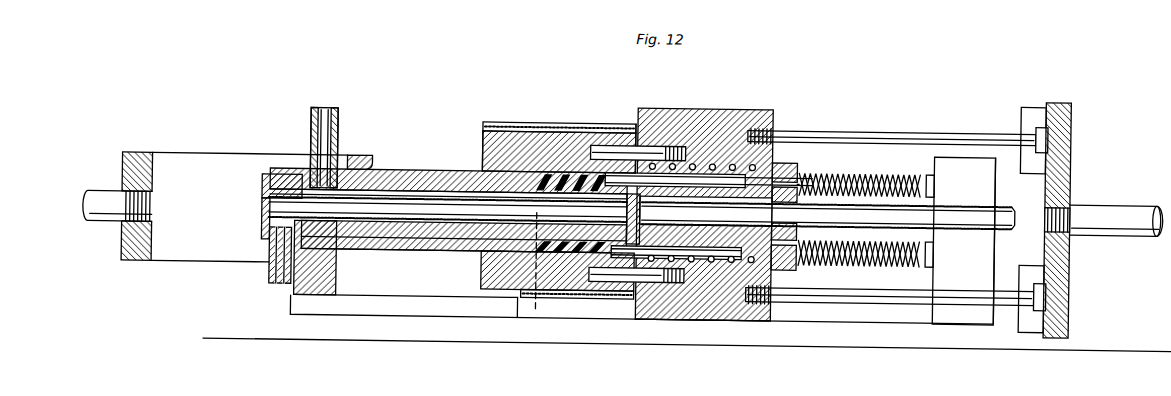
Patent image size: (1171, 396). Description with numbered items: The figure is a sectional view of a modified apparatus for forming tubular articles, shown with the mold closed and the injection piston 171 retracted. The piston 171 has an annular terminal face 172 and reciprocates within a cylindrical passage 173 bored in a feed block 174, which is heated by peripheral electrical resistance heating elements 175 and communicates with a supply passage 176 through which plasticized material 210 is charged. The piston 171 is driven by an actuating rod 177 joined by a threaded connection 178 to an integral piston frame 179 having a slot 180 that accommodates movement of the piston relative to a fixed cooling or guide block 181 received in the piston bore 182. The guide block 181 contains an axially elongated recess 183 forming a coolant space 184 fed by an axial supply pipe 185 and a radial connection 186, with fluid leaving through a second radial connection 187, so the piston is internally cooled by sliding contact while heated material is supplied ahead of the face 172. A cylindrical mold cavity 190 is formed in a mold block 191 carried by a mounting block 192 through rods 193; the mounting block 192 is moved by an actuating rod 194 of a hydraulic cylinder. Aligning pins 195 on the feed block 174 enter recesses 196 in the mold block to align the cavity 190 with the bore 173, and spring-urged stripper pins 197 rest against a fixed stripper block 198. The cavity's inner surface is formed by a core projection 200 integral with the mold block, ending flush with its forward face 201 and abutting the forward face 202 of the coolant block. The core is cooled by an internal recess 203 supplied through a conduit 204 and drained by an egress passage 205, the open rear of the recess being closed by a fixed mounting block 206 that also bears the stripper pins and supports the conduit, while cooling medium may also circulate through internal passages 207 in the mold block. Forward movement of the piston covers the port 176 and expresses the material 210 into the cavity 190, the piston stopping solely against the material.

The injection piston 171 is at (429, 163).
The annular terminal face 172 is at (533, 168).
The cylindrical passage 173 is at (488, 150).
The feed block 174 is at (556, 140).
The electrical resistance heating elements 175 is at (596, 130).
The supply passage 176 is at (687, 249).
The actuating rod 177 is at (105, 172).
The threaded joint 178 is at (145, 205).
The piston frame 179 is at (216, 158).
The slot 180 is at (152, 158).
The cooling or guide block 181 is at (386, 166).
The piston bore 182 is at (452, 167).
The axially elongated recess 183 is at (437, 223).
The coolant space 184 is at (475, 223).
The axial supply pipe 185 is at (390, 222).
The radial connection 186 is at (268, 276).
The second radial connection 187 is at (336, 127).
The cylindrical mold cavity 190 is at (697, 252).
The mold block 191 is at (750, 98).
The mounting block 192 is at (1060, 140).
The rods 193 is at (870, 134).
The actuating rod 194 is at (1100, 194).
The aligning pins 195 is at (615, 140).
The aligned recesses 196 is at (683, 145).
The stripper pins 197 is at (772, 165).
The fixed stripper block 198 is at (958, 147).
The core projection 200 is at (715, 240).
The forward face of the mold block 201 is at (636, 112).
The forward face of the coolant block 202 is at (636, 186).
The internal recess 203 is at (778, 258).
The conduit 204 is at (945, 220).
The egress passage 205 is at (800, 218).
The fixed mounting block 206 is at (800, 178).
The internal passages 207 is at (776, 128).
The plasticized material 210 is at (586, 246).